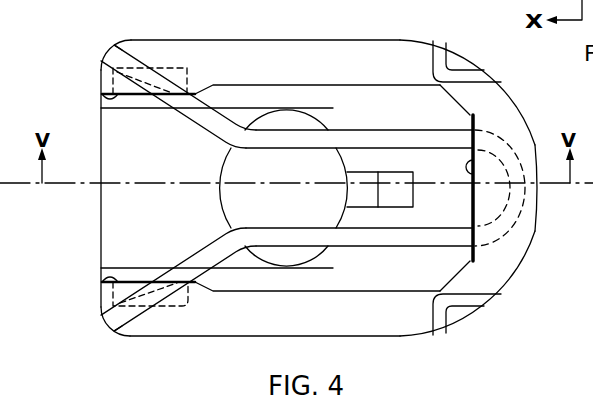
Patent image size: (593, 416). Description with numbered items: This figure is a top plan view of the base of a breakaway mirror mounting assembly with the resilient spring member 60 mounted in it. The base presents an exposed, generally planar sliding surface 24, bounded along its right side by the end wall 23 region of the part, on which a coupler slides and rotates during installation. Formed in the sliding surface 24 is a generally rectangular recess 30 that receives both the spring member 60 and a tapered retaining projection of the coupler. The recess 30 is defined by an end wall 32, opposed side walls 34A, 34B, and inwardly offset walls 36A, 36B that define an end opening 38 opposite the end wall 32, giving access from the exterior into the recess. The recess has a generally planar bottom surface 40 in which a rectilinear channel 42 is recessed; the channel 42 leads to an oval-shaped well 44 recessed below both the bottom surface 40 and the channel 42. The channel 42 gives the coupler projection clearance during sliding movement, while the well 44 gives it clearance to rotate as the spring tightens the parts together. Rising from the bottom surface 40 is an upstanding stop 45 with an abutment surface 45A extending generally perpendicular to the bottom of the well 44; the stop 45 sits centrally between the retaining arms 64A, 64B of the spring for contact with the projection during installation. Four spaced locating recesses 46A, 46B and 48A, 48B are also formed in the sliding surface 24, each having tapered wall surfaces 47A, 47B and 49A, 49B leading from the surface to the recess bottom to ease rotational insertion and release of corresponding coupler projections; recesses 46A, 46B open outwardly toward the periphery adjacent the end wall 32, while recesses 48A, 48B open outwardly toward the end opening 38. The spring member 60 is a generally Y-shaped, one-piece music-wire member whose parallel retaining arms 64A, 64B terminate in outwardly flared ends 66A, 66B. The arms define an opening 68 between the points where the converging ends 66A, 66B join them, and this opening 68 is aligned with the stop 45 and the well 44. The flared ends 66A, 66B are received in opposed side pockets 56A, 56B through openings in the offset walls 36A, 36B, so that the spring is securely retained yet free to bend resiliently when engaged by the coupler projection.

The end wall 23 is at (538, 205).
The sliding surface 24 is at (318, 71).
The recess 30 is at (415, 291).
The end wall 32 is at (478, 147).
The side wall 34A is at (381, 84).
The side wall 34B is at (330, 292).
The inwardly offset wall 36A is at (100, 100).
The inwardly offset wall 36B is at (115, 265).
The end opening 38 is at (115, 133).
The bottom surface 40 is at (435, 123).
The channel 42 is at (165, 213).
The well 44 is at (297, 195).
The stop 45 is at (386, 171).
The abutment surface 45A is at (343, 192).
The locating recess 46A is at (452, 57).
The locating recess 46B is at (465, 316).
The tapered wall surface 47A is at (481, 76).
The tapered wall surface 47B is at (483, 305).
The locating recess 48A is at (105, 68).
The locating recess 48B is at (105, 298).
The tapered wall surface 49A is at (115, 55).
The tapered wall surface 49B is at (113, 316).
The side pocket 56A is at (188, 67).
The side pocket 56B is at (186, 307).
The resilient spring member 60 is at (441, 250).
The retaining arm 64A is at (362, 139).
The retaining arm 64B is at (352, 236).
The outwardly flared end 66A is at (208, 120).
The outwardly flared end 66B is at (200, 251).
The opening 68 is at (241, 193).